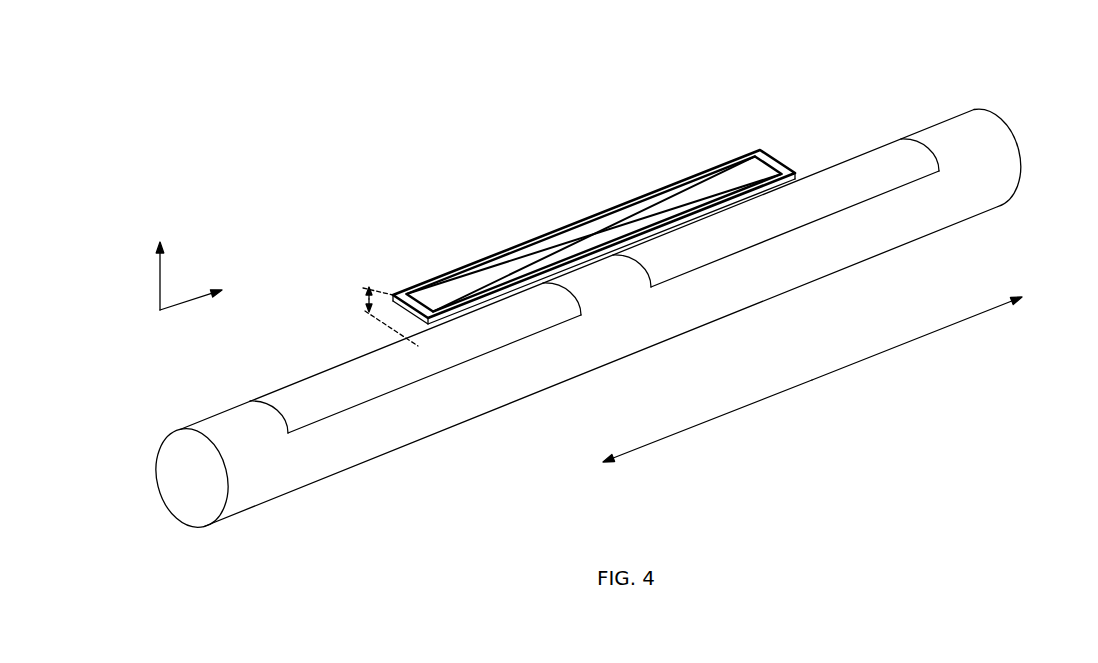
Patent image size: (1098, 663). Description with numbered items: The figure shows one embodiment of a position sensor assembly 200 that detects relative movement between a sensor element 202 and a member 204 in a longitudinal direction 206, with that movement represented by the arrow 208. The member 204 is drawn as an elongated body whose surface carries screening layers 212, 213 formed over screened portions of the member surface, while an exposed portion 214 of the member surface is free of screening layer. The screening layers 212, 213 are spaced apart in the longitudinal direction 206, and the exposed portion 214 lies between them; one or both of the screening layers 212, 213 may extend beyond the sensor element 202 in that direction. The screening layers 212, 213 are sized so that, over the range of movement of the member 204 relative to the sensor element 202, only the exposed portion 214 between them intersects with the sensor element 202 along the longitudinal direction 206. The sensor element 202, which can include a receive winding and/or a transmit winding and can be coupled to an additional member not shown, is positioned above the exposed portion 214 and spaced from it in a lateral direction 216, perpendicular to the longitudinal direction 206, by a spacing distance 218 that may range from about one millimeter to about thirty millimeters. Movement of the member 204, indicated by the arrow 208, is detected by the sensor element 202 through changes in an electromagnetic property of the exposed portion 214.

The position sensor assembly 200 is at (344, 55).
The sensor element 202 is at (521, 238).
The member 204 is at (1020, 177).
The longitudinal direction 206 is at (209, 290).
The arrow 208 is at (648, 446).
The screening layer 212 is at (682, 267).
The screening layer 213 is at (415, 386).
The exposed portion 214 is at (605, 292).
The lateral direction 216 is at (164, 261).
The spacing distance 218 is at (367, 288).